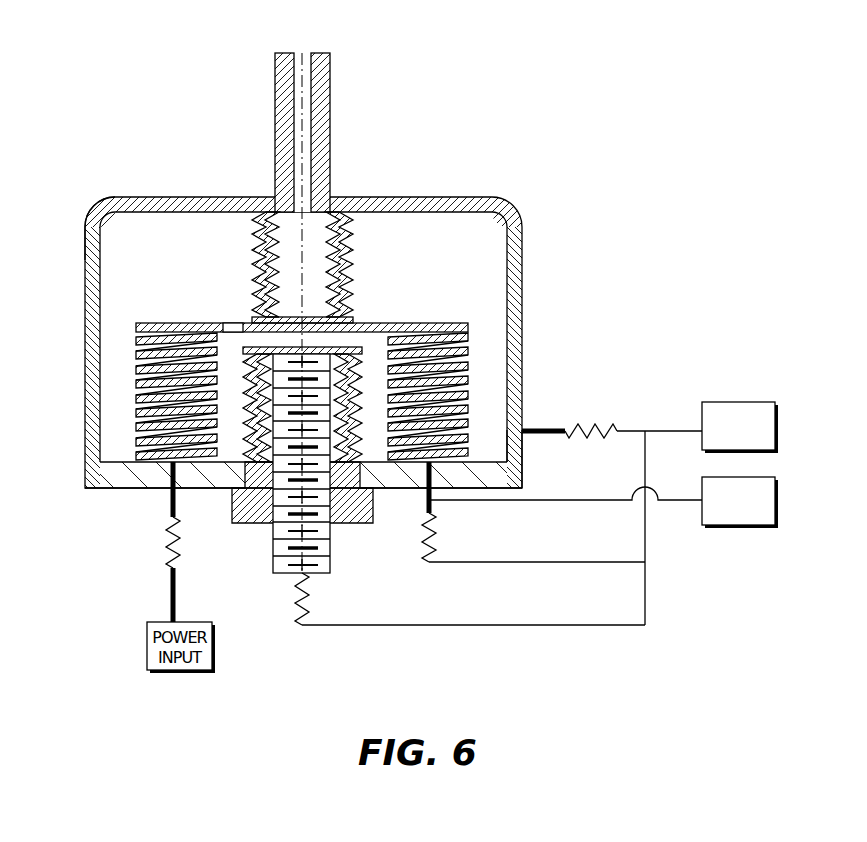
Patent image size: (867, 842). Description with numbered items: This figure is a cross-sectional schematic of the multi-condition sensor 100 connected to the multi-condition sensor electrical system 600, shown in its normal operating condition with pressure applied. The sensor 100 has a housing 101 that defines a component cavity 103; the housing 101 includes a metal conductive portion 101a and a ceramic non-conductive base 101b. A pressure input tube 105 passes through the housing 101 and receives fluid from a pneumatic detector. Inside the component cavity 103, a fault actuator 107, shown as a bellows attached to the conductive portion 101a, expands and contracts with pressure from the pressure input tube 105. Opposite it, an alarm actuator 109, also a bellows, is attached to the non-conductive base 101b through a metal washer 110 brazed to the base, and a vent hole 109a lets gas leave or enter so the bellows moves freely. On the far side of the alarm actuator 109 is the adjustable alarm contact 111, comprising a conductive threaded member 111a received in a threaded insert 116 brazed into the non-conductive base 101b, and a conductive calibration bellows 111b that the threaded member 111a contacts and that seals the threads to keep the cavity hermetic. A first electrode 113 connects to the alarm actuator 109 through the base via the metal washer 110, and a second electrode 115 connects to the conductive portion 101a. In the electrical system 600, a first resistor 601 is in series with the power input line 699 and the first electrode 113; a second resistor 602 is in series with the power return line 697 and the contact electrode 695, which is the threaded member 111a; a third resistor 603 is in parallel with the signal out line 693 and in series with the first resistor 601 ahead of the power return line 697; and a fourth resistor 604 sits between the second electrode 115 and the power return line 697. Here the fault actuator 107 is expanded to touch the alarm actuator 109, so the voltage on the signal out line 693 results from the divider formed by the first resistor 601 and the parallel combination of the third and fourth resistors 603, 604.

The multi-condition sensor 100 is at (560, 98).
The housing 101 is at (110, 193).
The conductive portion 101a is at (85, 248).
The non-conductive base 101b is at (523, 455).
The component cavity 103 is at (450, 245).
The pressure input tube 105 is at (336, 114).
The fault actuator 107 is at (358, 244).
The alarm actuator 109 is at (438, 316).
The vent hole 109a is at (222, 335).
The metal washer 110 is at (136, 470).
The adjustable alarm contact 111 is at (333, 419).
The conductive threaded member 111a is at (335, 494).
The conductive calibration bellows 111b is at (368, 450).
The first electrode 113 is at (168, 499).
The second electrode 115 is at (548, 424).
The threaded insert 116 is at (247, 528).
The multi-condition sensor electrical system 600 is at (658, 664).
The first resistor 601 is at (165, 545).
The second resistor 602 is at (305, 630).
The third resistor 603 is at (432, 565).
The fourth resistor 604 is at (608, 425).
The signal out line 693 is at (777, 502).
The contact electrode 695 is at (272, 570).
The power return line 697 is at (678, 429).
The power input line 699 is at (168, 593).